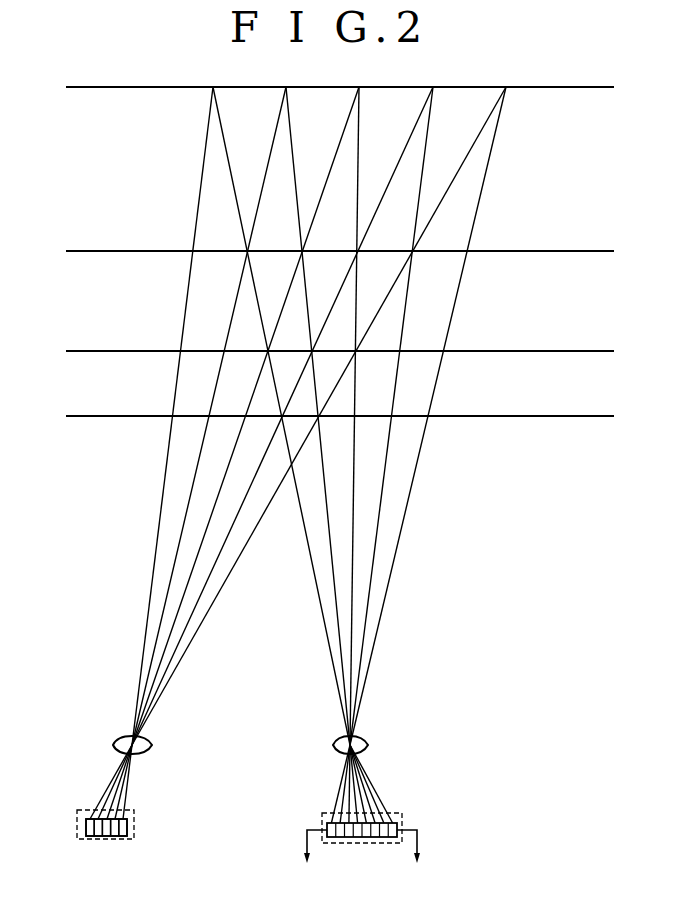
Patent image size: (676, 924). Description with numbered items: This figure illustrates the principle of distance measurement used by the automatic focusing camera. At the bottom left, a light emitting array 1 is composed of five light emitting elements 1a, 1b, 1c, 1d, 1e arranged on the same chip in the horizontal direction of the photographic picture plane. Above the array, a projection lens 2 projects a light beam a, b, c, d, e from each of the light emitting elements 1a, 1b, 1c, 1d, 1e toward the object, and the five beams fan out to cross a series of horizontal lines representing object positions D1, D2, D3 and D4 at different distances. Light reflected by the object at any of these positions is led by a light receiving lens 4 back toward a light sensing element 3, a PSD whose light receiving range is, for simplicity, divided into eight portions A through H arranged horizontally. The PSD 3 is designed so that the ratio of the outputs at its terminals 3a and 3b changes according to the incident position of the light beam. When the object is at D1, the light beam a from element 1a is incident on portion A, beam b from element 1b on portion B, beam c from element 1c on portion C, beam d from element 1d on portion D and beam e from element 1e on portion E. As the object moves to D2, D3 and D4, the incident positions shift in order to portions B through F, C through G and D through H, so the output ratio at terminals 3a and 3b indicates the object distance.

The light emitting array 1 is at (80, 810).
The light emitting element 1a is at (90, 838).
The light emitting element 1b is at (98, 838).
The light emitting element 1c is at (107, 838).
The light emitting element 1d is at (115, 838).
The light emitting element 1e is at (123, 838).
The projection lens 2 is at (112, 745).
The light sensing element (PSD) 3 is at (399, 813).
The terminal 3a is at (418, 838).
The terminal 3b is at (306, 836).
The light receiving lens 4 is at (369, 745).
The light beam a is at (175, 666).
The light beam b is at (179, 638).
The light beam c is at (178, 609).
The light beam d is at (170, 582).
The light beam e is at (155, 553).
The object position D1 is at (329, 88).
The object position D2 is at (329, 252).
The object position D3 is at (329, 352).
The object position D4 is at (329, 417).